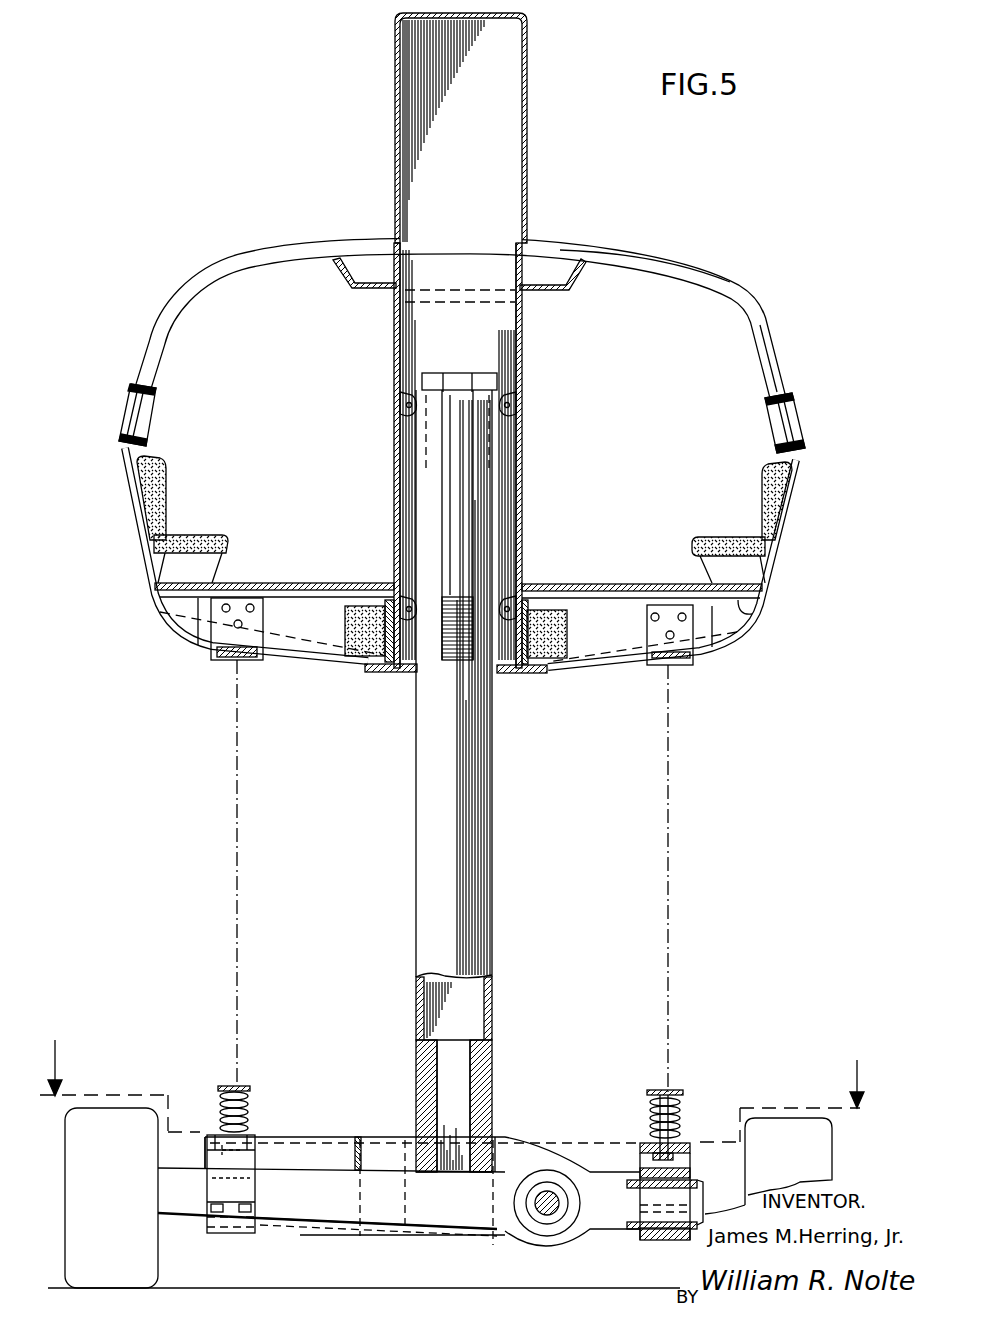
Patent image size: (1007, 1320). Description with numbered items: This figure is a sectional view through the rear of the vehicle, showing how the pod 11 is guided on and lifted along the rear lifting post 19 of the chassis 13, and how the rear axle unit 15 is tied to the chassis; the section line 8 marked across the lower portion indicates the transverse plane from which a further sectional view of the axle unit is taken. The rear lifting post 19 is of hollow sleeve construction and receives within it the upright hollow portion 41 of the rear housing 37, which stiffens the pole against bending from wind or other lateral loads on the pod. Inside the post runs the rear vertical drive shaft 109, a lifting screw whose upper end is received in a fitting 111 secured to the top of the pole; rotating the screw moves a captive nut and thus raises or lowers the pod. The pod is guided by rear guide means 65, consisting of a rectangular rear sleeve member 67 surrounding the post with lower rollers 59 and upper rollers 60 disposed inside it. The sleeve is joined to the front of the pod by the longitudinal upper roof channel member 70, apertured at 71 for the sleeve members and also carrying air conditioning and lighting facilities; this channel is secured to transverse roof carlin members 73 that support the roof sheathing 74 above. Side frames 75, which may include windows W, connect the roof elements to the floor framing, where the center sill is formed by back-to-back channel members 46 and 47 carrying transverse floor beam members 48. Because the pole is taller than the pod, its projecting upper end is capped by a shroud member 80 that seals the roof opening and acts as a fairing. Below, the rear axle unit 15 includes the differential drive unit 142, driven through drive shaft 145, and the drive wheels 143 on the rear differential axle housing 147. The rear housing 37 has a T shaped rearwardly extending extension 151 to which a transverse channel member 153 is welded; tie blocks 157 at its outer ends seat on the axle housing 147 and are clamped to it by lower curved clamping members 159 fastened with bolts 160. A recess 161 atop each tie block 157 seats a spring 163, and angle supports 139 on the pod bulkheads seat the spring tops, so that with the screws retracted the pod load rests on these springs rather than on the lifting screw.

The section line 8- 8 is at (452, 1078).
The pod 11 is at (768, 650).
The chassis 13 is at (582, 1135).
The rear axle unit 15 is at (693, 1135).
The rear lifting post 19 is at (416, 860).
The rear housing 37 is at (508, 1130).
The upright hollow portion 41 is at (484, 1072).
The channel member 46 is at (345, 636).
The channel member 47 is at (566, 622).
The transverse floor beam member 48 is at (762, 618).
The lower rollers 59 is at (402, 594).
The upper rollers 60 is at (400, 408).
The rear guide means 65 is at (528, 366).
The rear sleeve member 67 is at (524, 483).
The longitudinal upper roof channel member 70 is at (368, 292).
The aperture 71 is at (400, 282).
The transverse roof carlin member 73 is at (682, 262).
The roof sheathing 74 is at (300, 250).
The side frame 75 is at (760, 370).
The shroud member 80 is at (396, 86).
The rear vertical drive shaft 109 is at (455, 540).
The fitting 111 is at (440, 372).
The angle support 139 is at (213, 656).
The differential drive unit 142 is at (545, 1212).
The drive wheels 143 is at (66, 1228).
The drive shaft 145 is at (505, 1250).
The rear differential axle housing 147 is at (330, 1212).
The T shaped rearwardly extending extension 151 is at (378, 1145).
The transverse channel member 153 is at (312, 1140).
The tie block 157 is at (208, 1158).
The lower curved clamping member 159 is at (208, 1234).
The bolts 160 is at (244, 1214).
The recess 161 is at (650, 1140).
The spring 163 is at (248, 1108).
The windows W is at (125, 404).